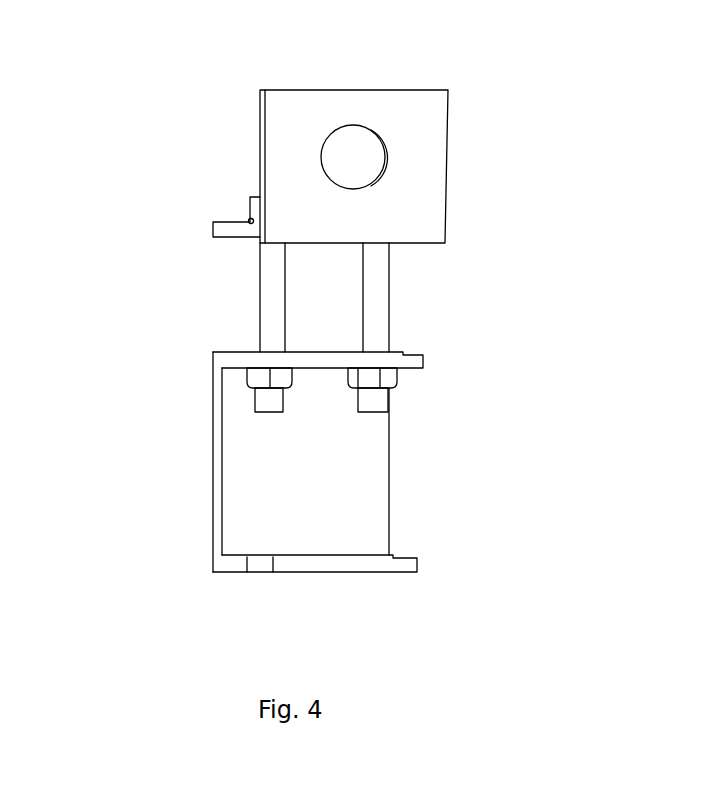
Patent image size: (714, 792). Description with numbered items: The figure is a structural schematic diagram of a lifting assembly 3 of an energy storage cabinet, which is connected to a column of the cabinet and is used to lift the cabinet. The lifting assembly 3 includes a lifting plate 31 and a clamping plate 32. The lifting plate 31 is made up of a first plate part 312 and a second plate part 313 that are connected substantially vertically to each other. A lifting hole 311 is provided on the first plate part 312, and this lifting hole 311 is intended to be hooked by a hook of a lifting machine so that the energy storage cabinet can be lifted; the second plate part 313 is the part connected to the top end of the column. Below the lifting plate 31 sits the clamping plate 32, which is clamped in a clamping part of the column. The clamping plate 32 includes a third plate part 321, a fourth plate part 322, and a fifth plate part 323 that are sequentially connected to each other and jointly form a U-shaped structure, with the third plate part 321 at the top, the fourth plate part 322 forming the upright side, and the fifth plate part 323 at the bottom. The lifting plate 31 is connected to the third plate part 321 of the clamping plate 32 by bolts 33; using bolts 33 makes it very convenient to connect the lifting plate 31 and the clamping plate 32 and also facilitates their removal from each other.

The lifting assembly 3 is at (120, 48).
The lifting plate 31 is at (158, 105).
The lifting hole 311 is at (367, 167).
The first plate part 312 is at (272, 130).
The second plate part 313 is at (245, 221).
The clamping plate 32 is at (120, 332).
The third plate part 321 is at (228, 360).
The fourth plate part 322 is at (232, 463).
The fifth plate part 323 is at (232, 562).
The bolts 33 is at (263, 310).